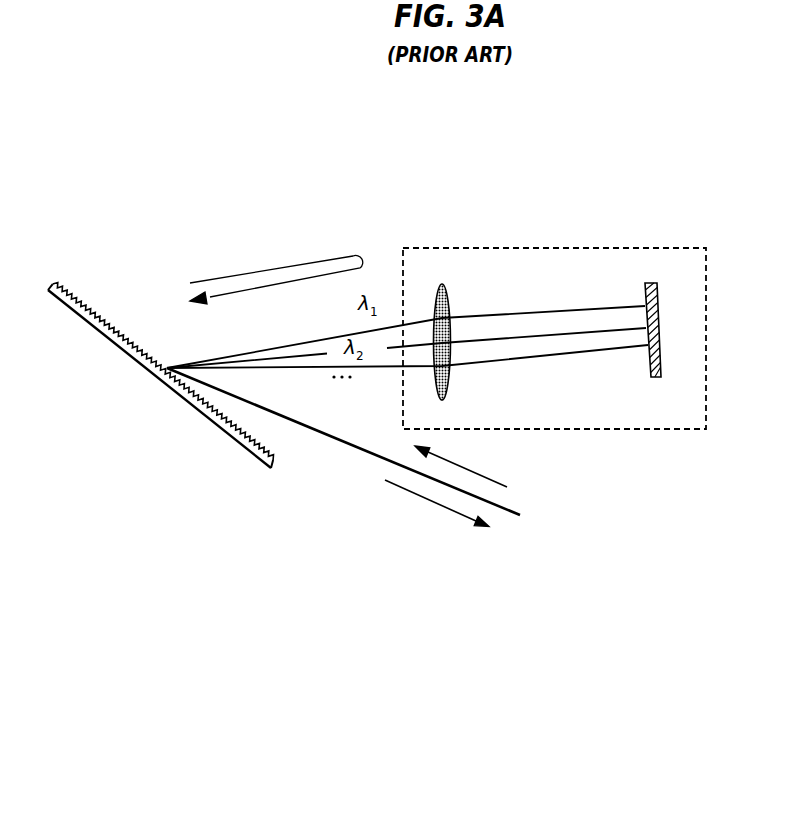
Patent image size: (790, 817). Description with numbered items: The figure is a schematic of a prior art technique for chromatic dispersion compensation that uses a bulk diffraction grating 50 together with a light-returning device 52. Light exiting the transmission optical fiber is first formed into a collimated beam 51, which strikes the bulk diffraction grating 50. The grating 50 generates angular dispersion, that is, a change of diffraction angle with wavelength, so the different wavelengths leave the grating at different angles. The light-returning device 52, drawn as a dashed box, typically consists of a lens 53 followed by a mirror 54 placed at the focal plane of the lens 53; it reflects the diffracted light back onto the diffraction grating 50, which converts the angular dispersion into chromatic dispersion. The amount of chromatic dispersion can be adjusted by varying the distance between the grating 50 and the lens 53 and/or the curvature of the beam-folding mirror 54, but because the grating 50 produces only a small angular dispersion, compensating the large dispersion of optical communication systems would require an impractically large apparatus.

The bulk diffraction grating 50 is at (85, 320).
The collimated beam 51 is at (348, 448).
The light-returning device 52 is at (663, 431).
The lens 53 is at (438, 281).
The mirror 54 is at (646, 282).